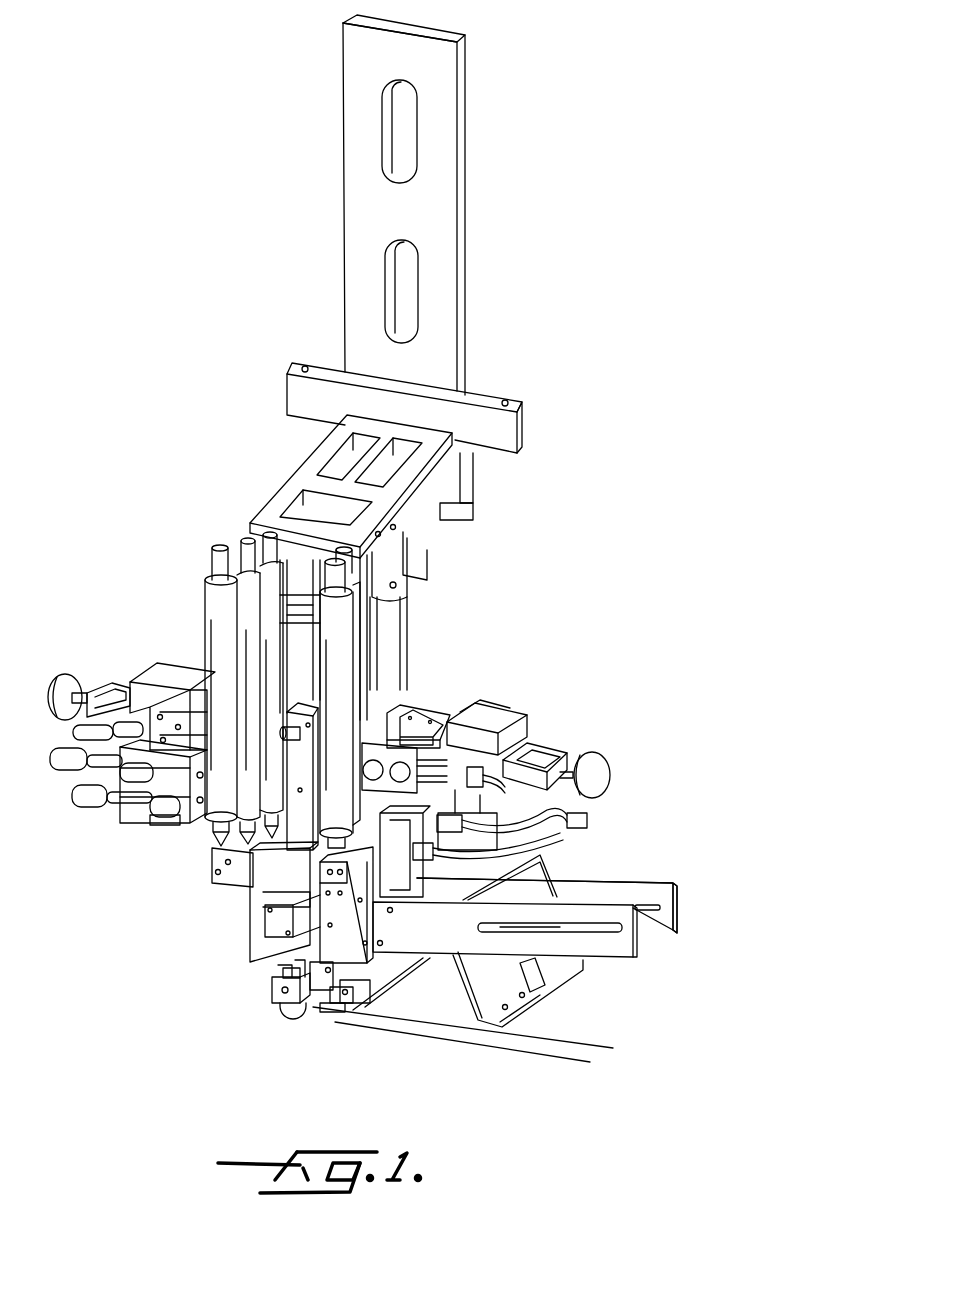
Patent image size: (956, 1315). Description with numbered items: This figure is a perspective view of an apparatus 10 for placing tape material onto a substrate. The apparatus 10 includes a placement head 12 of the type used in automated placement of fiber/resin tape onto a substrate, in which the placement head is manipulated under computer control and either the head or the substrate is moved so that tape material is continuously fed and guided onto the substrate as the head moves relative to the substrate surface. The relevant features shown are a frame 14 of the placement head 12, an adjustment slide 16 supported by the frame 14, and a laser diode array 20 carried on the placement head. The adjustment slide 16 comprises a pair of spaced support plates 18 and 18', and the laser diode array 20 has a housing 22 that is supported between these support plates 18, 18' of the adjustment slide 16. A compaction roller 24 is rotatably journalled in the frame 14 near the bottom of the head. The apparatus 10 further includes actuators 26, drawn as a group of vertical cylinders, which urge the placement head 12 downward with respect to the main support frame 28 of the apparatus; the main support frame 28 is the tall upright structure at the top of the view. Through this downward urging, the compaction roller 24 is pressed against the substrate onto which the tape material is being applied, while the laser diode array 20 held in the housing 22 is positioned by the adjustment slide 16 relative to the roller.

The apparatus 10 is at (125, 537).
The placement head 12 is at (252, 977).
The frame 14 is at (267, 945).
The adjustment slide 16 is at (689, 890).
The support plate 18 is at (516, 964).
The support plate 18' is at (549, 885).
The laser diode array 20 is at (537, 1012).
The housing 22 is at (485, 998).
The compaction roller 24 is at (285, 1013).
The actuators 26 is at (328, 650).
The main support frame 28 is at (293, 403).